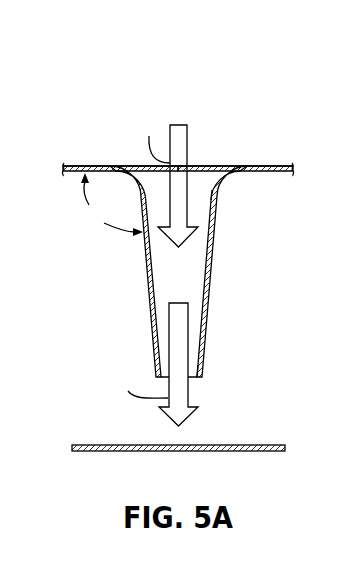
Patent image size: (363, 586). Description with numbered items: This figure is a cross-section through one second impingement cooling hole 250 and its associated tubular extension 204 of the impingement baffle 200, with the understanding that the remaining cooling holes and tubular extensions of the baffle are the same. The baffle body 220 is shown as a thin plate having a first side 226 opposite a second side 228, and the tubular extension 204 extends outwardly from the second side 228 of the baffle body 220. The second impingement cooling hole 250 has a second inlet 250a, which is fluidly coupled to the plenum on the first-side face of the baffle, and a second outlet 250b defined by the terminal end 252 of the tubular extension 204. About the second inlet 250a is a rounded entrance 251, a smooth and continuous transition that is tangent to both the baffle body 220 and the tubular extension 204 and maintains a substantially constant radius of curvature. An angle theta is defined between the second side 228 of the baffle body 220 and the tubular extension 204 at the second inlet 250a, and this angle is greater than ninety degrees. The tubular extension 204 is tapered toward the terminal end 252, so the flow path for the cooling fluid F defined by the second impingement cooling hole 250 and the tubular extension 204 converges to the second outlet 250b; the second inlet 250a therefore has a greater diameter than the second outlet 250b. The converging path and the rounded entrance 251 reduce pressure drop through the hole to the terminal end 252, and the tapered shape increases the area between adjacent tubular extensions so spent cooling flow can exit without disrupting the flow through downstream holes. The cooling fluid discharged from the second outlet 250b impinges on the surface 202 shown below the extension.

The impingement baffle 200 is at (131, 82).
The base plate 202 is at (206, 445).
The tubular extension 204 is at (247, 251).
The baffle body 220 is at (73, 158).
The first side 226 is at (120, 158).
The second side 228 is at (266, 172).
The second impingement cooling hole 250 is at (253, 142).
The second inlet 250a is at (217, 190).
The second outlet 250b is at (205, 372).
The rounded entrance 251 is at (223, 188).
The terminal end 252 is at (194, 378).